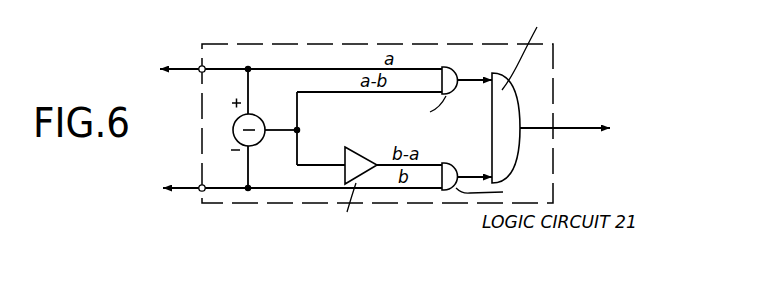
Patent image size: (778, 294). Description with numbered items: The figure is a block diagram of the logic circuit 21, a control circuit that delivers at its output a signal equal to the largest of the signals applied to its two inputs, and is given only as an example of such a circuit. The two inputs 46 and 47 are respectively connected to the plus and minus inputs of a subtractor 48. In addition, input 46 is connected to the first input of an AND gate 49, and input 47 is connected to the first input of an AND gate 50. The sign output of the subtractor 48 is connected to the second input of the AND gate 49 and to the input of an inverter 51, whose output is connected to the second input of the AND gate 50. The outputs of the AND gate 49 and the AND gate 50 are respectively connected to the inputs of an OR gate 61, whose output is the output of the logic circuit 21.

The logic circuit 21 is at (412, 44).
The input 46 is at (200, 66).
The input 47 is at (198, 192).
The subtractor 48 is at (261, 116).
The AND gate 49 is at (452, 67).
The AND gate 50 is at (453, 163).
The inverter 51 is at (353, 148).
The OR gate 61 is at (519, 115).